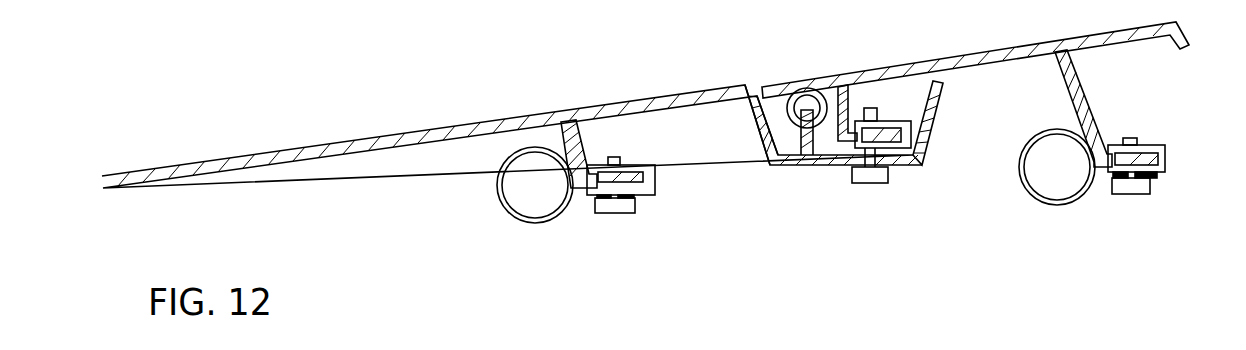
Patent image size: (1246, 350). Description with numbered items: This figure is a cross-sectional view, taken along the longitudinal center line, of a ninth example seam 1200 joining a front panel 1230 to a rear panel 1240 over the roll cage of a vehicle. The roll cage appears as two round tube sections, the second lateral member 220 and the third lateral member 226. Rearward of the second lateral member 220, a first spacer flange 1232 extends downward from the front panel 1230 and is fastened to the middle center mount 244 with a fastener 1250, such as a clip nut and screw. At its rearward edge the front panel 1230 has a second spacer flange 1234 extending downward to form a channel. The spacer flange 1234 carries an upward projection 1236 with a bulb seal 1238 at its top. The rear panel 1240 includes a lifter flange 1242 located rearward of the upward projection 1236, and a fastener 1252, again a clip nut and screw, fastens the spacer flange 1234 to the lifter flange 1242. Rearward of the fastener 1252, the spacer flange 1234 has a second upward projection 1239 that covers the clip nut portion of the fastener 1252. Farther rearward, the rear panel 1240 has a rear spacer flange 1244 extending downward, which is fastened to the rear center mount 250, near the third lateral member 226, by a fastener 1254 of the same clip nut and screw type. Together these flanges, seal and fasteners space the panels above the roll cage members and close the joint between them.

The seam 1200 is at (243, 105).
The front panel 1230 is at (667, 97).
The first spacer flange 1232 is at (570, 137).
The second spacer flange 1234 is at (763, 140).
The upward projection 1236 is at (808, 118).
The bulb seal 1238 is at (802, 97).
The second upward projection 1239 is at (937, 120).
The rear panel 1240 is at (993, 53).
The lifter flange 1242 is at (843, 100).
The rear spacer flange 1244 is at (1078, 88).
The second lateral member 220 is at (512, 212).
The third lateral member 226 is at (1028, 192).
The middle center mount 244 is at (582, 190).
The rear center mount 250 is at (1107, 175).
The fastener 1250 is at (612, 203).
The fastener 1252 is at (872, 182).
The fastener 1254 is at (1133, 183).